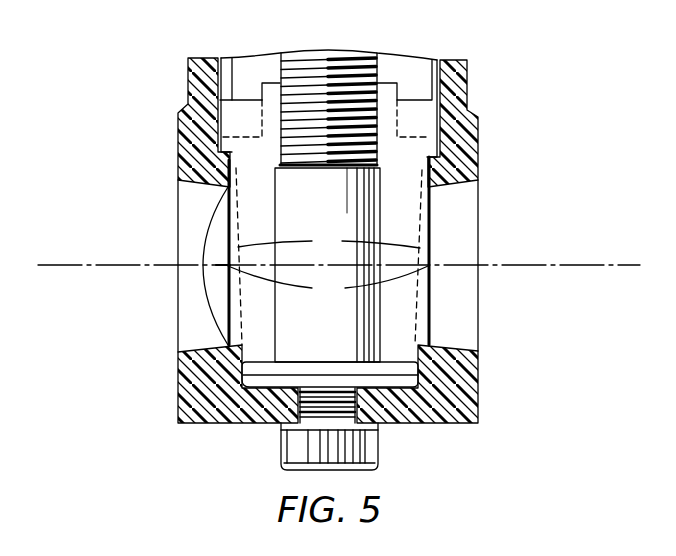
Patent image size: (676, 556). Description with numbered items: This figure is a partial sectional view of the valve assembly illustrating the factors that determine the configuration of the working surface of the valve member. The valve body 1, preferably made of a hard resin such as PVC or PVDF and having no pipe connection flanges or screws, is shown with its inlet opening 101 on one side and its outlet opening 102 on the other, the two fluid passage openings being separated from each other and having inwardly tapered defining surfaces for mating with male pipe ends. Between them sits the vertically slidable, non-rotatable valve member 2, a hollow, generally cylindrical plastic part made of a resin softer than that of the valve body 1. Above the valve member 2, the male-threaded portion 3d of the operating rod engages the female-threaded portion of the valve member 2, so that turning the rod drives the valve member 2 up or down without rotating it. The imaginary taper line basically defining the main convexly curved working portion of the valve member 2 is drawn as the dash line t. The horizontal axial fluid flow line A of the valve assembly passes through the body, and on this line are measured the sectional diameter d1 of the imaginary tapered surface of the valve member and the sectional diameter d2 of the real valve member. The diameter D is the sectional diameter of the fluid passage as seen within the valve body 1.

The valve body 1 is at (178, 124).
The valve member 2 is at (271, 88).
The male-threaded portion 3d is at (350, 54).
The inlet opening 101 is at (190, 322).
The outlet opening 102 is at (465, 323).
The imaginary taper line t is at (430, 213).
The axial fluid flow line A is at (329, 265).
The sectional diameter of the fluid passage D is at (214, 264).
The sectional diameter of the imaginary tapered surface d1 is at (329, 243).
The sectional diameter of the real valve member d2 is at (328, 286).